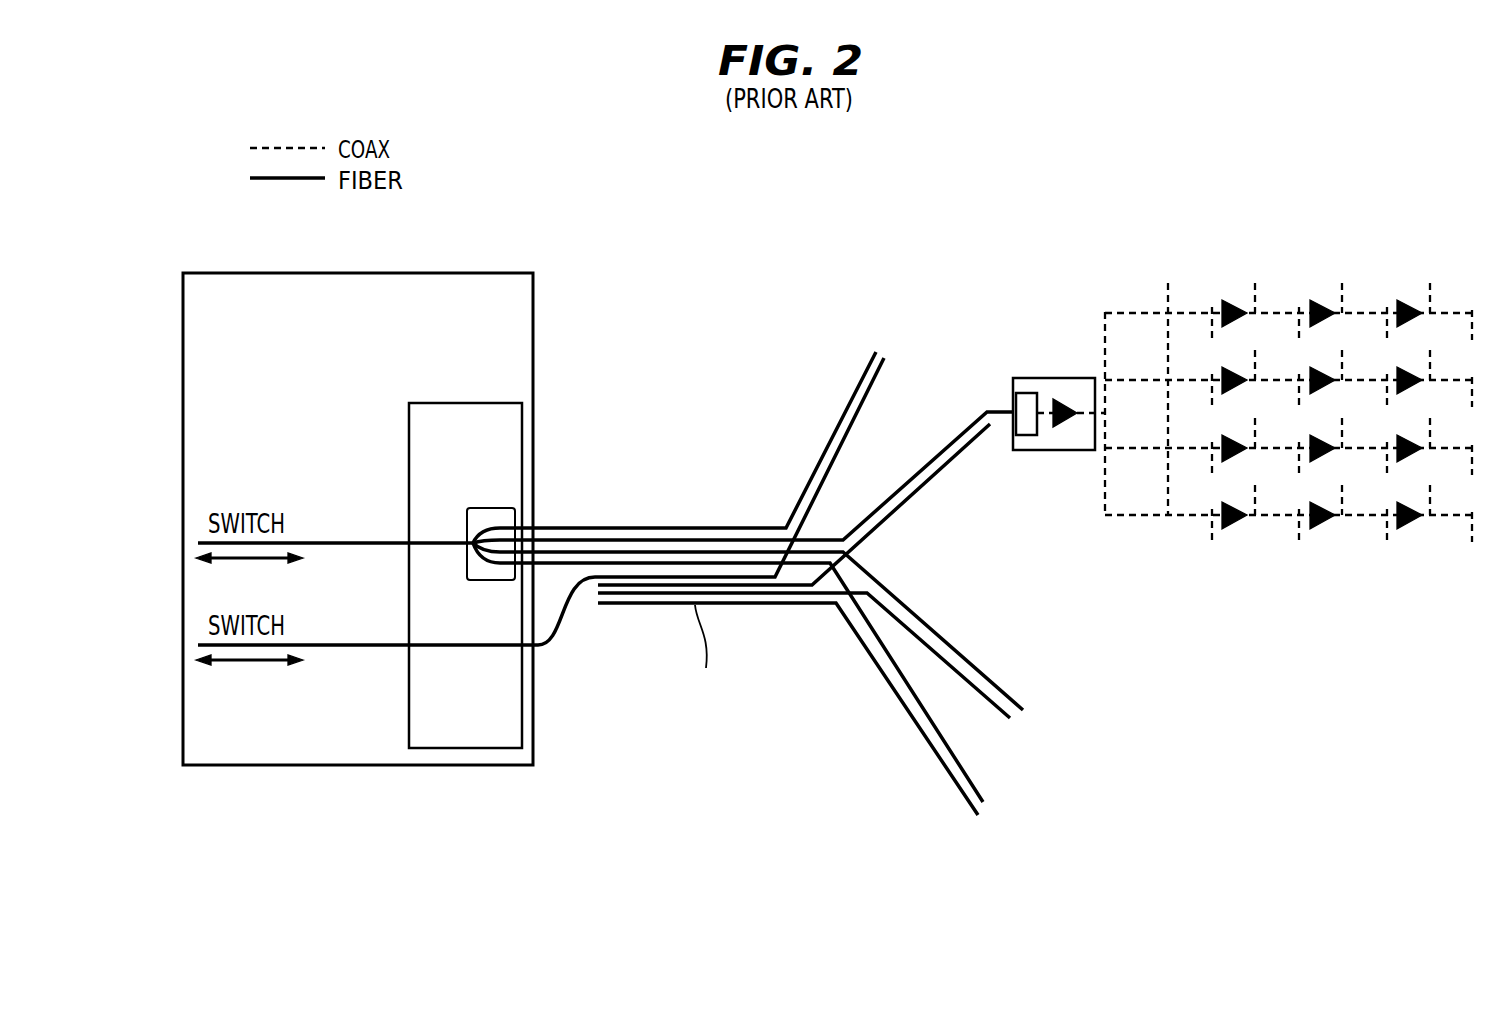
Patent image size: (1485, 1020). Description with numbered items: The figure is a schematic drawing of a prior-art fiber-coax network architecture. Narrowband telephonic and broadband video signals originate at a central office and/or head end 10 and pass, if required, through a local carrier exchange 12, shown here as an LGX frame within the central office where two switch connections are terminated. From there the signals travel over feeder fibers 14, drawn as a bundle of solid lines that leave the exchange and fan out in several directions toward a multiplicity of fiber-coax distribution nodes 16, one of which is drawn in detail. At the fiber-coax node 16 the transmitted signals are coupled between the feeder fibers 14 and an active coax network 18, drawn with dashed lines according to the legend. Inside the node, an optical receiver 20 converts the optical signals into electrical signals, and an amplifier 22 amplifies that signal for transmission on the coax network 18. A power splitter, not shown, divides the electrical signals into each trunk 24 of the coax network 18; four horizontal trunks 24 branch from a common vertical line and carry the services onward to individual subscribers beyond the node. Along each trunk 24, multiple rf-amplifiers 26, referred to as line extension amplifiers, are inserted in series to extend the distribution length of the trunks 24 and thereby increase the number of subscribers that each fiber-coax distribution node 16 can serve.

The central office and/or head end 10 is at (463, 287).
The local carrier exchange 12 is at (475, 748).
The feeder fibers 14 is at (646, 505).
The fiber-coax distribution node 16 is at (1029, 411).
The active coax network 18 is at (1250, 401).
The optical receiver 20 is at (1020, 402).
The amplifier 22 is at (1056, 405).
The trunk 24 is at (1160, 335).
The rf-amplifiers (line extension amplifiers) 26 is at (1236, 300).